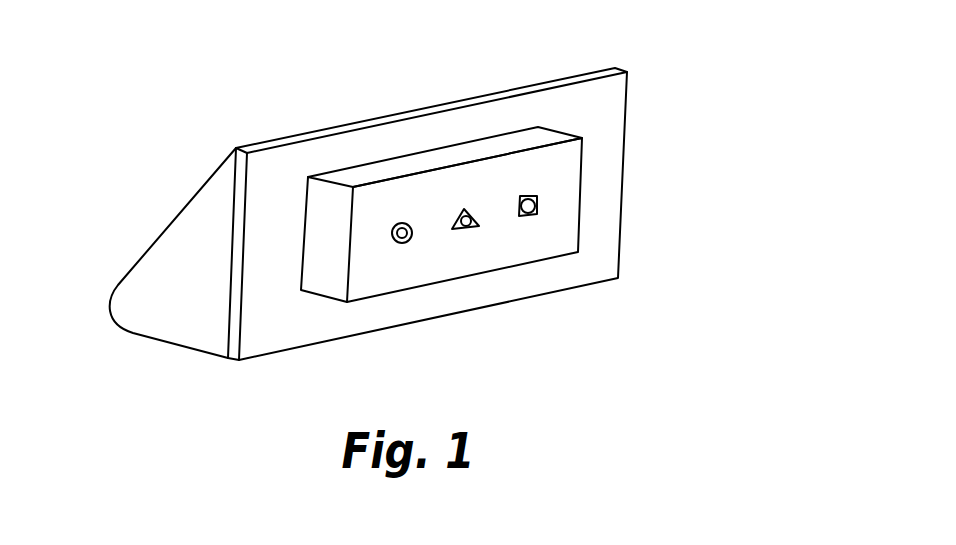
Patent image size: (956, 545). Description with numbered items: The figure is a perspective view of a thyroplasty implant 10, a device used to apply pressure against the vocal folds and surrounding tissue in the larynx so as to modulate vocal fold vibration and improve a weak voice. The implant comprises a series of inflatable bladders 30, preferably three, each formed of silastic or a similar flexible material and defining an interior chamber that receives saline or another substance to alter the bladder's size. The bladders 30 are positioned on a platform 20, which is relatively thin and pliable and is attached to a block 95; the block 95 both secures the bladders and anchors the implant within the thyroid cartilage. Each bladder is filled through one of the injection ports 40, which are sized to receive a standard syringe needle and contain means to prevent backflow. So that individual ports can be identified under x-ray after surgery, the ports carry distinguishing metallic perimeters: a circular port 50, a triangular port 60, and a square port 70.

The thyroplasty implant 10 is at (421, 193).
The platform 20 is at (583, 162).
The inflatable bladders 30 is at (160, 268).
The injection ports 40 is at (507, 185).
The circular port 50 is at (397, 222).
The triangular port 60 is at (463, 209).
The square port 70 is at (527, 195).
The block 95 is at (598, 67).